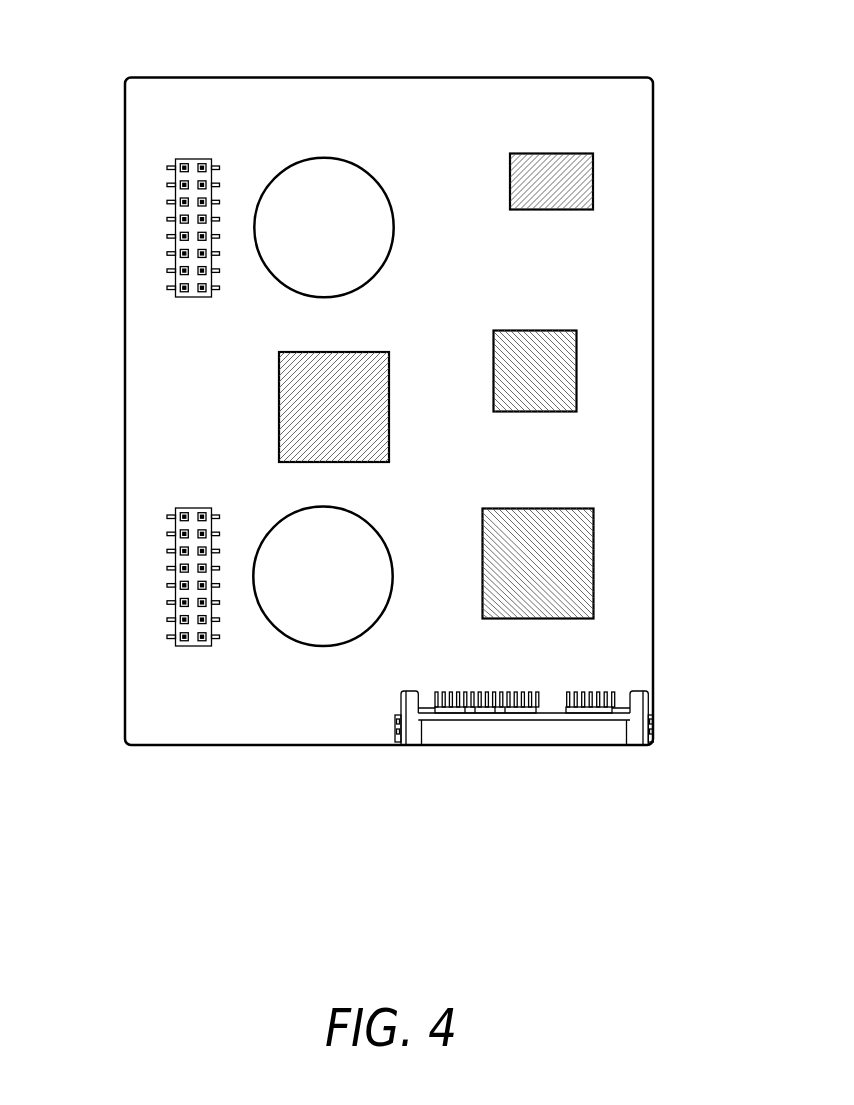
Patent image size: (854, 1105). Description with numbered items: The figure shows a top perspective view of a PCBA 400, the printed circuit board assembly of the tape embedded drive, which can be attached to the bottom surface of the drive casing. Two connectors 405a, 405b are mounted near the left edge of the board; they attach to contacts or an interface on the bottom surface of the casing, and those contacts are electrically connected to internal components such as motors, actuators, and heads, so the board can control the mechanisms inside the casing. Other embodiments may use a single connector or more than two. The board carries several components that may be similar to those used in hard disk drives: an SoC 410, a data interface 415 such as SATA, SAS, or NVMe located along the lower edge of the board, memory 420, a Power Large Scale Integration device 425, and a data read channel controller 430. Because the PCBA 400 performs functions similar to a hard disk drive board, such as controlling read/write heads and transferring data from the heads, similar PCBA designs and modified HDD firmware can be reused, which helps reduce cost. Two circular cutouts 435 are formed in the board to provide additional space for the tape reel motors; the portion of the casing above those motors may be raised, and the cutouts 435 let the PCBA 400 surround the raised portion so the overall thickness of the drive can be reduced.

The PCBA 400 is at (612, 110).
The connector 405a is at (183, 197).
The connector 405b is at (182, 547).
The SoC 410 is at (567, 577).
The data interface 415 is at (534, 760).
The memory 420 is at (567, 188).
The Power Large Scale Integration 425 is at (567, 382).
The data read channel controller 430 is at (293, 358).
The cutout 435 is at (305, 180).